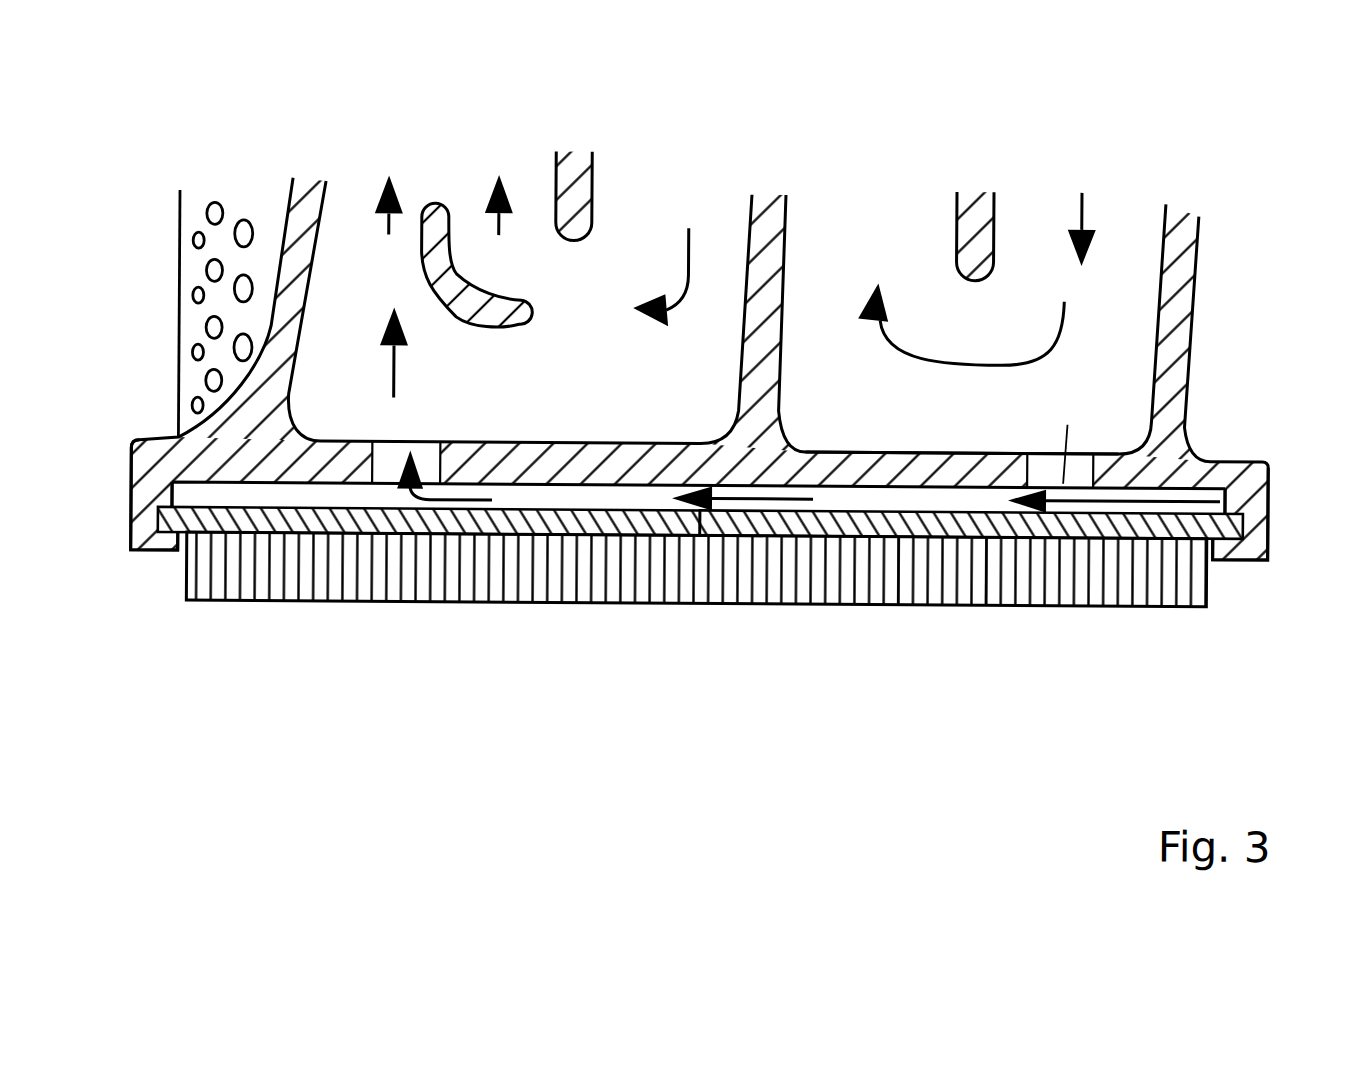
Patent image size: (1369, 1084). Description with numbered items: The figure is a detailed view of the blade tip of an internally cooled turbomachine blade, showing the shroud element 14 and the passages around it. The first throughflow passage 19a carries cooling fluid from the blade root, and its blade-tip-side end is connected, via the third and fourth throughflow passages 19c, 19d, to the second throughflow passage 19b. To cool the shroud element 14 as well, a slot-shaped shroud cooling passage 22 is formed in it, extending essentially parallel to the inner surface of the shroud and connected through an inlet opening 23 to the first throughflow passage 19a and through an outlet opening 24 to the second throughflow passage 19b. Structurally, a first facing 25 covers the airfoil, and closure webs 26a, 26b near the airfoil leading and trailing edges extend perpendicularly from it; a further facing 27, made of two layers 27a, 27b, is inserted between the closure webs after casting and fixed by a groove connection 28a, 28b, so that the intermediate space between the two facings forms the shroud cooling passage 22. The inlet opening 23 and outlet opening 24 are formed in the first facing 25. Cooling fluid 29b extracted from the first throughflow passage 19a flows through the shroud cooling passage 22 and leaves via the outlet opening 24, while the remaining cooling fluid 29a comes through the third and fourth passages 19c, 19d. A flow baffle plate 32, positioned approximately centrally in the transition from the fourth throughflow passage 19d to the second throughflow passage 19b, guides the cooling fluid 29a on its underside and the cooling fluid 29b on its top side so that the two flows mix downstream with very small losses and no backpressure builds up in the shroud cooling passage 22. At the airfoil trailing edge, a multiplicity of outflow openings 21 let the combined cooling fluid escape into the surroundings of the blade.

The shroud element 14 is at (607, 427).
The first throughflow passage 19a is at (1107, 160).
The second throughflow passage 19b is at (475, 160).
The third throughflow passage 19c is at (835, 158).
The fourth throughflow passage 19d is at (643, 159).
The outflow openings 21 is at (242, 220).
The shroud cooling passage 22 is at (575, 498).
The inlet opening 23 is at (1047, 456).
The outlet opening 24 is at (427, 451).
The first facing 25 is at (927, 455).
The closure web 26a is at (1250, 526).
The closure web 26b is at (130, 529).
The further facing 27 is at (182, 547).
The layer of the further facing 27a is at (975, 535).
The layer of the further facing 27b is at (896, 572).
The groove connection 28a is at (1238, 518).
The groove connection 28b is at (143, 509).
The cooling fluid 29a is at (500, 216).
The cooling fluid 29b is at (382, 229).
The flow baffle plate 32 is at (500, 328).